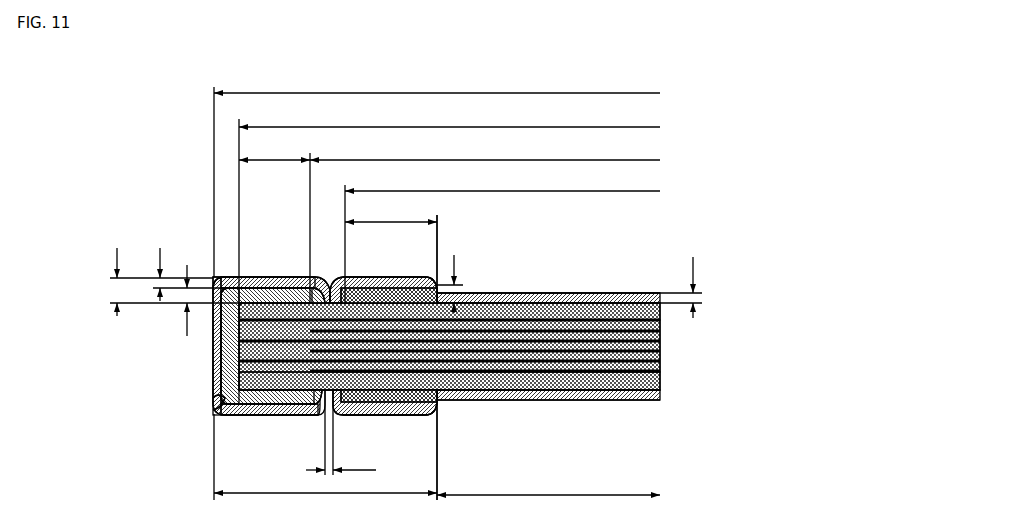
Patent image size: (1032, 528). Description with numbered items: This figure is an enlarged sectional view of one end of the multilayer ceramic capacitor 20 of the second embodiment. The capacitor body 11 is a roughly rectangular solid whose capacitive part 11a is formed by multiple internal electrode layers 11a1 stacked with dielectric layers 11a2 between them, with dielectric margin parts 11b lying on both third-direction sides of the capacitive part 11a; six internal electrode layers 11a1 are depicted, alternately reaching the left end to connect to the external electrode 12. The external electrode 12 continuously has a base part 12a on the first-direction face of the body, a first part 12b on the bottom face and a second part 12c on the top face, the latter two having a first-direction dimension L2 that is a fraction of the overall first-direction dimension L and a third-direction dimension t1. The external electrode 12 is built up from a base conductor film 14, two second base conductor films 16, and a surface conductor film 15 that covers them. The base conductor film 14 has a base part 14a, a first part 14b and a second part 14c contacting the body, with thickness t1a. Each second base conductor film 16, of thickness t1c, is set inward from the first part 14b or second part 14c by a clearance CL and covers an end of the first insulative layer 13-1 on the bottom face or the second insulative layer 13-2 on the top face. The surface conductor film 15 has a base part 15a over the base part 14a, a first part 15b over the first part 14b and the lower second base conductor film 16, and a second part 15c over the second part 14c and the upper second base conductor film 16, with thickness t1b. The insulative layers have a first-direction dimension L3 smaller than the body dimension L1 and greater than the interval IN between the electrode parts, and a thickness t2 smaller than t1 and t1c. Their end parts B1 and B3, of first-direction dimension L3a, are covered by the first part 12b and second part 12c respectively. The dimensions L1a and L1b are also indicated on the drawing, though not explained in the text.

The capacitor body 11 is at (500, 294).
The capacitive part 11a is at (545, 312).
The internal electrode layers 11a1 is at (497, 382).
The dielectric layers 11a2 is at (545, 370).
The dielectric margin parts 11b is at (593, 308).
The external electrode 12 is at (212, 347).
The base part 12a is at (219, 346).
The first part 12b is at (250, 415).
The second part 12c is at (250, 278).
The base conductor film 14 is at (216, 372).
The base part 14a is at (230, 346).
The first part 14b is at (288, 402).
The second part 14c is at (288, 290).
The surface conductor film 15 is at (212, 396).
The base part 15a is at (219, 402).
The first part 15b is at (365, 415).
The second part 15c is at (365, 282).
The second base conductor film 16 is at (400, 292).
The first insulative layer 13-1 is at (640, 400).
The second insulative layer 13-2 is at (640, 298).
The multilayer ceramic capacitor 20 is at (207, 406).
The first-direction dimension L is at (437, 83).
The first-direction dimension of capacitor body L1 is at (449, 117).
The length L1a is at (485, 149).
The length L1b is at (274, 149).
The first-direction dimension of first and second parts L2 is at (325, 504).
The first-direction dimension of insulative layer L3 is at (502, 181).
The first-direction dimension of covered parts L3a is at (391, 211).
The clearance CL is at (341, 480).
The first-direction interval IN is at (548, 505).
The part B1 is at (437, 404).
The part B3 is at (437, 282).
The third-direction dimension of first and second parts t1 is at (107, 282).
The third-direction dimension of base conductor film parts t1a is at (170, 300).
The third-direction dimension of surface conductor film parts t1b is at (142, 274).
The third-direction dimension of second base conductor film t1c is at (468, 284).
The third-direction dimension of insulative layer t2 is at (702, 287).